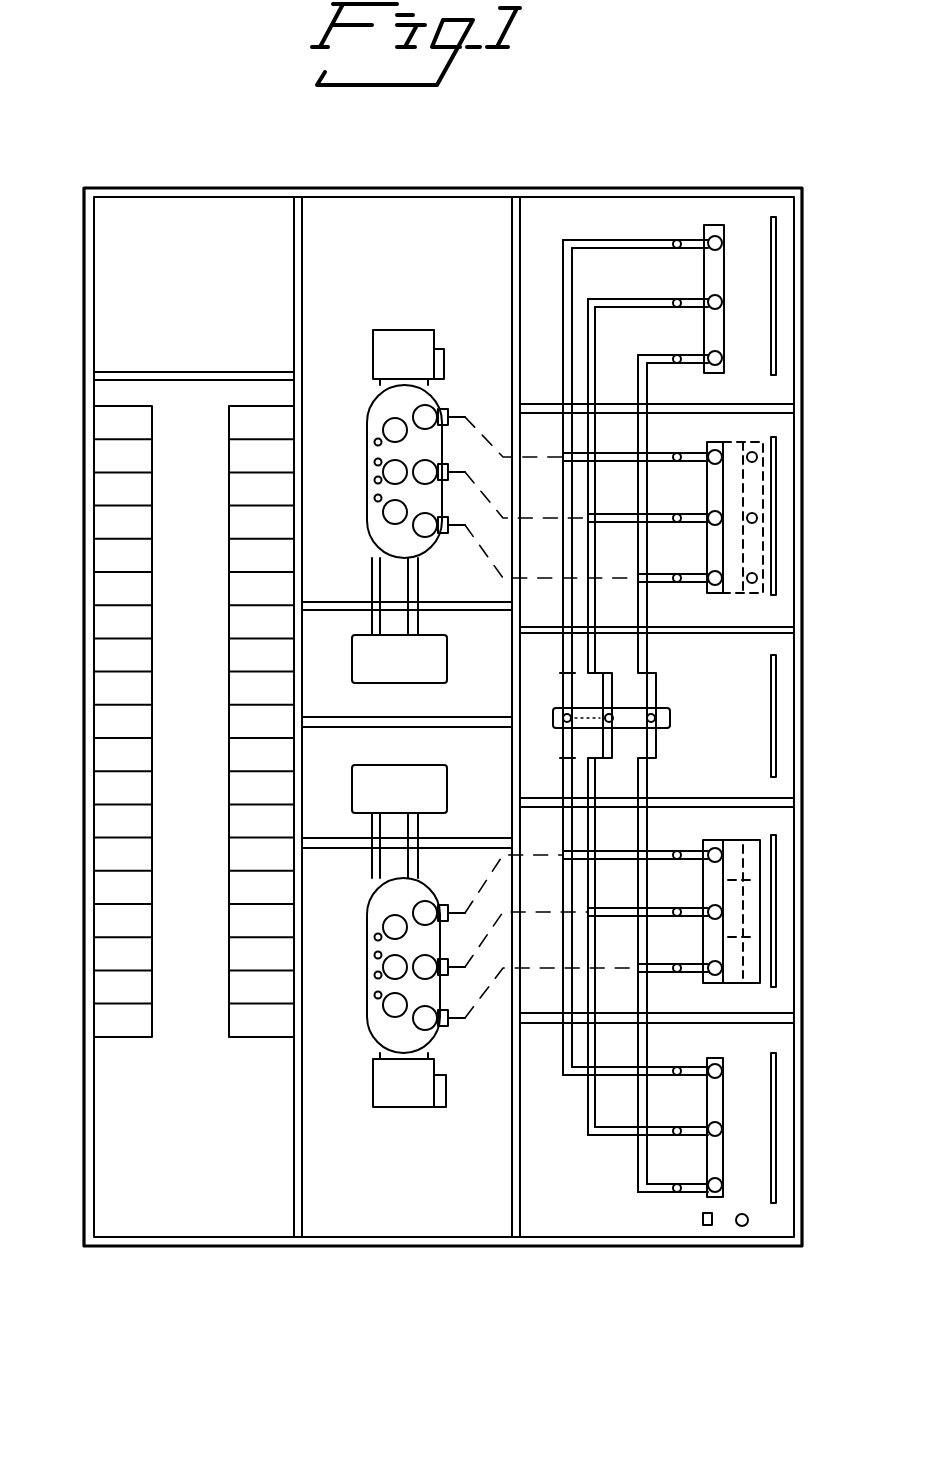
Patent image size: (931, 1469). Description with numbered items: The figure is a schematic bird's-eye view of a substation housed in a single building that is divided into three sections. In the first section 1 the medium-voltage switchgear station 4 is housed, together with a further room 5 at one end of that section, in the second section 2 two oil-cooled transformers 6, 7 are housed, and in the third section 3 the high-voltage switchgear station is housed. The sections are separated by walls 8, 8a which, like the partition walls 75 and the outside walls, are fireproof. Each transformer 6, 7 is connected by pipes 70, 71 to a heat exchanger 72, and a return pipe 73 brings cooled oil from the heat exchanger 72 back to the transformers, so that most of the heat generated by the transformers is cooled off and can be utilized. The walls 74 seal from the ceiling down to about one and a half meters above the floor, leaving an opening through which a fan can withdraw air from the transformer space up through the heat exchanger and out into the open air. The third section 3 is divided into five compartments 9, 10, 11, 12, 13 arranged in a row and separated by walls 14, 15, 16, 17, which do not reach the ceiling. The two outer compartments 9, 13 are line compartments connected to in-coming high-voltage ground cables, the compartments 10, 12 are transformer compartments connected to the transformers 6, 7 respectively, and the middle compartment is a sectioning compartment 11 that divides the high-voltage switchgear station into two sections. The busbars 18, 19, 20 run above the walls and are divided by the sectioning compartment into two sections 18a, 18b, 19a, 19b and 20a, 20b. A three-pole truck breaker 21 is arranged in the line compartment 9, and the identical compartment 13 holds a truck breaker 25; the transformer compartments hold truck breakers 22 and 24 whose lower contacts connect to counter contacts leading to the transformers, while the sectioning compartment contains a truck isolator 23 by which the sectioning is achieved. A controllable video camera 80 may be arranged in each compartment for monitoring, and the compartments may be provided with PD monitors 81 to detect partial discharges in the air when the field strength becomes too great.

The first section 1 is at (198, 756).
The second section 2 is at (466, 756).
The third section 3 is at (660, 779).
The medium-voltage switchgear station 4 is at (147, 1047).
The upper compartment 5 is at (197, 303).
The transformer 6 is at (375, 905).
The transformer 7 is at (368, 522).
The wall 8 is at (515, 1190).
The wall 8a is at (300, 1189).
The line compartment 9 is at (762, 1215).
The transformer compartment 10 is at (757, 1000).
The sectioning compartment 11 is at (757, 782).
The transformer compartment 12 is at (757, 610).
The line compartment 13 is at (760, 385).
The wall 14 is at (790, 1020).
The wall 15 is at (787, 802).
The wall 16 is at (790, 632).
The wall 17 is at (790, 410).
The busbar 18 is at (643, 1262).
The busbar section 18a is at (642, 1160).
The busbar section 18b is at (641, 375).
The busbar 19 is at (592, 1262).
The busbar section 19a is at (592, 1104).
The busbar section 19b is at (591, 300).
The busbar 20 is at (570, 1262).
The busbar section 20a is at (567, 1050).
The busbar section 20b is at (565, 269).
The truck breaker 21 is at (722, 1098).
The truck breaker 22 is at (757, 882).
The truck isolator 23 is at (655, 686).
The truck breaker 24 is at (757, 530).
The truck breaker 25 is at (718, 320).
The pipe 70 is at (416, 572).
The pipe 71 is at (425, 827).
The heat exchanger 72 is at (418, 672).
The return pipe 73 is at (372, 568).
The wall 74 is at (470, 604).
The partition wall 75 is at (342, 718).
The video camera 80 is at (707, 1226).
The PD monitor 81 is at (742, 1227).